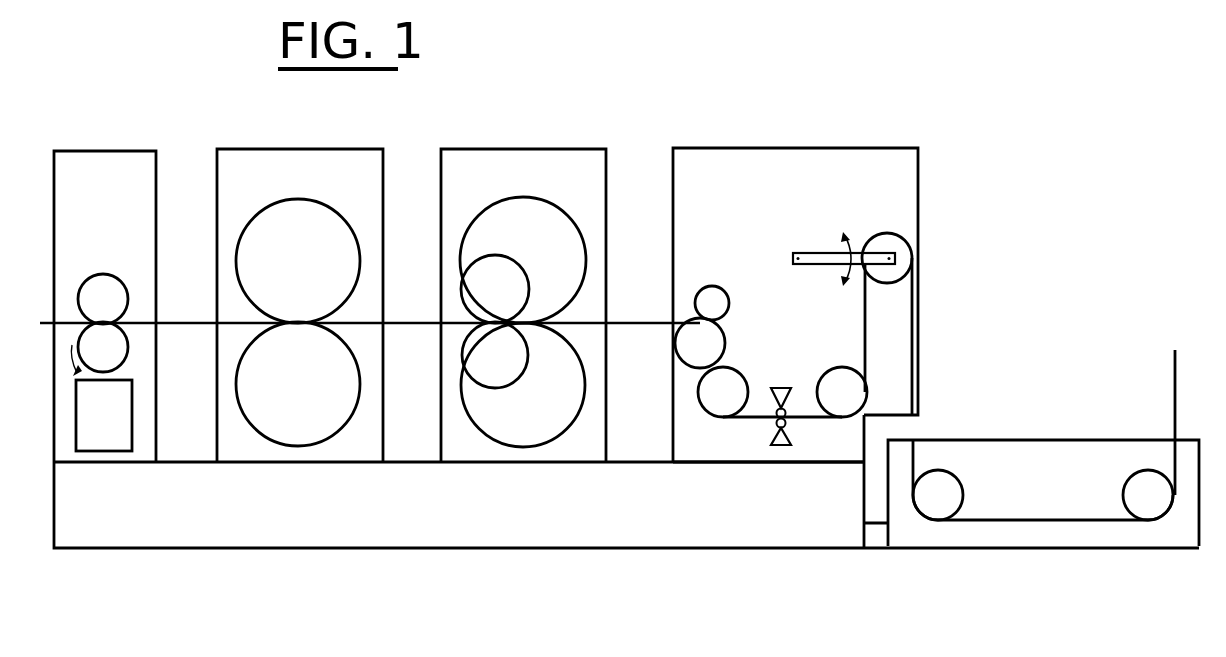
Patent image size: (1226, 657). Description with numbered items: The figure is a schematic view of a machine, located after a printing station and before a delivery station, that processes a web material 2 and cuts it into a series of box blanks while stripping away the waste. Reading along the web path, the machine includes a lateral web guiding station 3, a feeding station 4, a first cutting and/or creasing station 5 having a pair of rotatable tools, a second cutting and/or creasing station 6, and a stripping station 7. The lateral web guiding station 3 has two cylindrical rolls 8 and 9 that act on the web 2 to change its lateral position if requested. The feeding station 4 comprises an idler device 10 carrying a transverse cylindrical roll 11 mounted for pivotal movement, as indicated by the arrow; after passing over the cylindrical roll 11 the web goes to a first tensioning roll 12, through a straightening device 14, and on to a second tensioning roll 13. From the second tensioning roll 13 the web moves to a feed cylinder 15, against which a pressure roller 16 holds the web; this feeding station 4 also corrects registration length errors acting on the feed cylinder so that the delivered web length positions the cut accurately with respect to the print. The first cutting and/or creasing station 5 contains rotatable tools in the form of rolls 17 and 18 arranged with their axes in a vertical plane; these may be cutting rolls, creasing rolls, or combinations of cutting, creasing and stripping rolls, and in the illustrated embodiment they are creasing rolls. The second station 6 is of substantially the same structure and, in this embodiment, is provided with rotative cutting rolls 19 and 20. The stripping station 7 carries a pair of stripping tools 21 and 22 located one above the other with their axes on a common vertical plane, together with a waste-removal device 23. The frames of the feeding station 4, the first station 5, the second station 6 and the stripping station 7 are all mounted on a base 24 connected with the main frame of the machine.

The web material 2 is at (1173, 382).
The lateral web guiding station 3 is at (1028, 462).
The feeding station 4 is at (758, 175).
The first cutting and/or creasing station 5 is at (560, 175).
The second cutting and/or creasing station 6 is at (339, 172).
The stripping station 7 is at (134, 168).
The cylindrical roll 8 is at (1140, 490).
The cylindrical roll 9 is at (943, 490).
The idler device 10 is at (816, 226).
The transverse cylindrical roll 11 is at (897, 248).
The first tensioning roll 12 is at (845, 385).
The second tensioning roll 13 is at (718, 400).
The straightening device 14 is at (796, 428).
The feed cylinder 15 is at (692, 345).
The pressure roller 16 is at (714, 298).
The rotatable tool 17 is at (554, 410).
The rotatable tool 18 is at (497, 224).
The rotative cutting roll 19 is at (291, 425).
The rotative cutting roll 20 is at (268, 230).
The stripping tool 21 is at (95, 356).
The stripping tool 22 is at (93, 293).
The waste-removal device 23 is at (118, 440).
The base 24 is at (418, 510).